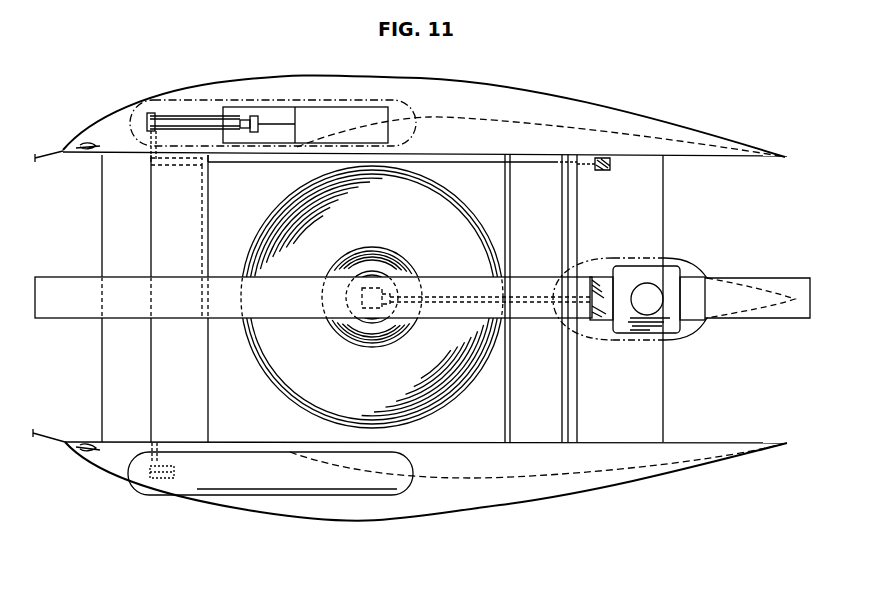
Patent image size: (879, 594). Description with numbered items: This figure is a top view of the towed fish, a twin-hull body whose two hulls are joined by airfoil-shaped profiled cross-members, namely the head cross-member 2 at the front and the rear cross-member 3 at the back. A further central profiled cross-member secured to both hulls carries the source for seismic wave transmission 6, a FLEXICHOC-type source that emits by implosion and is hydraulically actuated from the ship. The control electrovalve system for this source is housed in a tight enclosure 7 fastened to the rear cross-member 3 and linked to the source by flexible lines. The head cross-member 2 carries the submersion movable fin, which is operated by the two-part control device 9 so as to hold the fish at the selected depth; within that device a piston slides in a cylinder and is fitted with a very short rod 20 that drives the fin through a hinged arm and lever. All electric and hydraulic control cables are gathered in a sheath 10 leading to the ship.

The head cross-member 2 is at (102, 212).
The rear cross-member 3 is at (656, 393).
The source for seismic wave transmission 6 is at (430, 388).
The tight enclosure 7 is at (722, 277).
The control device 9 is at (303, 497).
The sheath 10 is at (787, 280).
The rod 20 is at (273, 122).